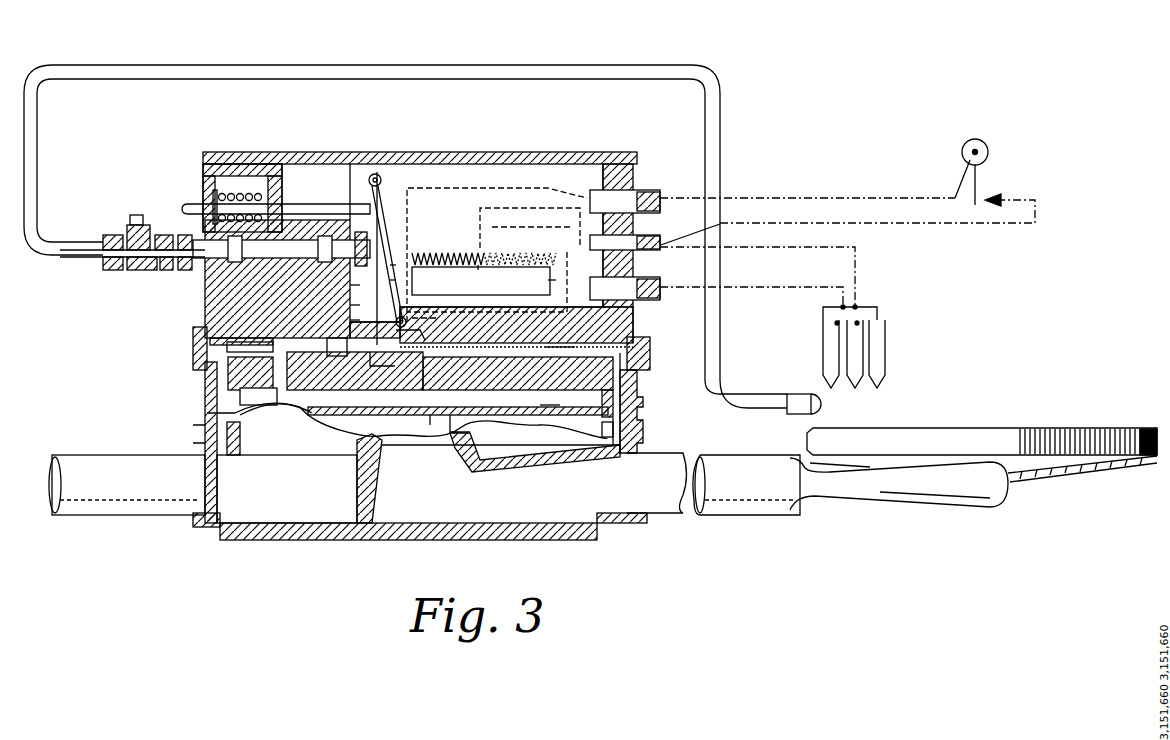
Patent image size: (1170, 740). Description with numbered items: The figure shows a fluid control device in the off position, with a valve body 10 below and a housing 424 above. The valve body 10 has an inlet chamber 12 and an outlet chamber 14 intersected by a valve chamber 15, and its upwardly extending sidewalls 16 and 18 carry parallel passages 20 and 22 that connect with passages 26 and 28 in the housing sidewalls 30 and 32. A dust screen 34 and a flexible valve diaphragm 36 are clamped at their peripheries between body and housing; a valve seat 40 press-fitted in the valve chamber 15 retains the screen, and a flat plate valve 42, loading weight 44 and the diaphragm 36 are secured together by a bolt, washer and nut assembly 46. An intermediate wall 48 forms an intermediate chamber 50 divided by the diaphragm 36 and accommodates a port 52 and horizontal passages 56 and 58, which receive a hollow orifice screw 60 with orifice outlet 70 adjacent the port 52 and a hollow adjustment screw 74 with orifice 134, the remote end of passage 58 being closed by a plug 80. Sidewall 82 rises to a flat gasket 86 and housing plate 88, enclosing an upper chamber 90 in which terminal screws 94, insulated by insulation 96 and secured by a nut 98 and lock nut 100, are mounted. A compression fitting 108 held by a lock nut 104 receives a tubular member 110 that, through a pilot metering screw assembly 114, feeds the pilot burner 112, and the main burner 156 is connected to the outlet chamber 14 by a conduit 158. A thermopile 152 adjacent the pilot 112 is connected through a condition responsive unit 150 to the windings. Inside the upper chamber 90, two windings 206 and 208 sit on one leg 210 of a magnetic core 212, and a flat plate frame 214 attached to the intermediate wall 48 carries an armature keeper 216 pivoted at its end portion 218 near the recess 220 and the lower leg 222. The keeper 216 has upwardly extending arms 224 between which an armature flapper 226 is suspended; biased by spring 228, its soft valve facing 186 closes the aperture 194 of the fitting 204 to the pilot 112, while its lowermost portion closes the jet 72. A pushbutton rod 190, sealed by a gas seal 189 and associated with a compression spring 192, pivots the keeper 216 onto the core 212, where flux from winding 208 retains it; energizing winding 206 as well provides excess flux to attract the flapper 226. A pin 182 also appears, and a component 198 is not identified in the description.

The valve body 10 is at (510, 539).
The inlet chamber 12 is at (294, 482).
The outlet chamber 14 is at (604, 497).
The valve chamber 15 is at (430, 497).
The sidewall 16 is at (205, 433).
The sidewall 18 is at (643, 435).
The passage 20 is at (240, 433).
The passage 22 is at (602, 436).
The passage 26 is at (225, 381).
The passage 28 is at (622, 389).
The sidewall 30 is at (200, 403).
The sidewall 32 is at (643, 400).
The dust screen 34 is at (305, 434).
The valve diaphragm 36 is at (296, 408).
The valve seat 40 is at (378, 438).
The flat plate valve 42 is at (465, 423).
The loading weight 44 is at (440, 406).
The bolt, washer and nut assembly 46 is at (410, 441).
The intermediate wall 48 is at (480, 393).
The intermediate chamber 50 is at (546, 406).
The port 52 is at (272, 397).
The horizontal passage 56 is at (327, 349).
The horizontal passage 58 is at (560, 351).
The hollow orifice screw 60 is at (195, 347).
The orifice outlet 70 is at (272, 350).
The jet 72 is at (350, 390).
The hollow adjustment screw 74 is at (470, 346).
The plug 80 is at (650, 348).
The sidewall 82 is at (375, 325).
The flat gasket 86 is at (633, 169).
The housing plate 88 is at (286, 156).
The upper chamber 90 is at (575, 184).
The terminal screw 94 is at (658, 208).
The insulation 96 is at (657, 304).
The nut 98 is at (645, 190).
The lock nut 100 is at (660, 194).
The lock nut 104 is at (205, 232).
The compression fitting 108 is at (178, 270).
The tubular member 110 is at (717, 137).
The pilot burner 112 is at (800, 396).
The pilot metering screw assembly 114 is at (138, 213).
The orifice 134 is at (380, 361).
The condition responsive unit 150 is at (1007, 187).
The thermopile 152 is at (902, 360).
The main burner 156 is at (980, 424).
The conduit 158 is at (700, 523).
The pin 182 is at (406, 322).
The valve facing 186 is at (390, 231).
The gas seal 189 is at (287, 187).
The rod 190 is at (224, 190).
The compression spring 192 is at (250, 190).
The aperture 194 is at (360, 236).
The solenoid frame 198 is at (205, 188).
The fitting 204 is at (356, 287).
The winding 206 is at (420, 256).
The winding 208 is at (505, 251).
The leg 210 is at (478, 270).
The magnetic core 212 is at (539, 281).
The flat plate frame 214 is at (645, 323).
The armature keeper 216 is at (396, 272).
The end portion 218 is at (396, 283).
The recess 220 is at (437, 318).
The lower leg 222 is at (481, 281).
The upwardly extending arms 224 is at (383, 185).
The armature flapper 226 is at (356, 319).
The spring 228 is at (356, 305).
The housing 424 is at (222, 290).